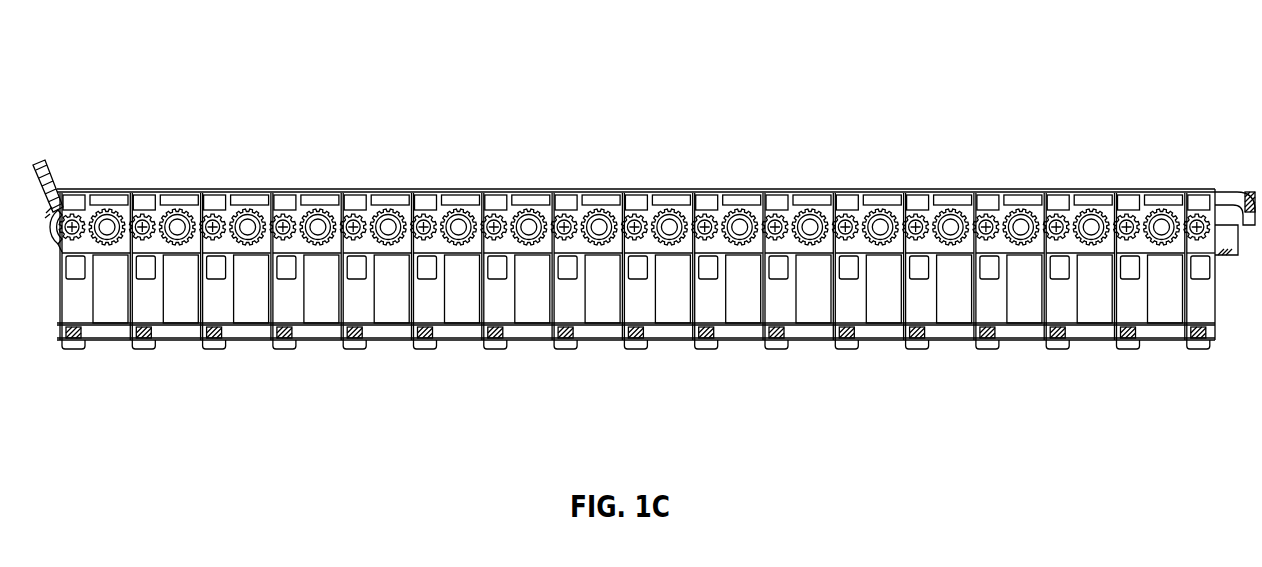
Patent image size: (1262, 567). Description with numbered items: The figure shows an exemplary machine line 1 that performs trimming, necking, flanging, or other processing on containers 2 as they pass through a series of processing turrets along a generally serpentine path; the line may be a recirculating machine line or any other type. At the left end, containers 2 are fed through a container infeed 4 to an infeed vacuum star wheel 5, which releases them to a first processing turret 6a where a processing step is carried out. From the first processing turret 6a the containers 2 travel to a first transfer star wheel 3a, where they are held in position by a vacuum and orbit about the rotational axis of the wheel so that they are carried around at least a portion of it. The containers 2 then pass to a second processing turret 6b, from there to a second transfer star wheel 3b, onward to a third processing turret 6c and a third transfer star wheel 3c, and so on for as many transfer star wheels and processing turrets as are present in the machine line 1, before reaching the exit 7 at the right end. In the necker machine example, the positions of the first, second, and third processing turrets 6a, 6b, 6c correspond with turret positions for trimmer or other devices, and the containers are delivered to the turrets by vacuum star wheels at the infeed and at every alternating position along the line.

The machine line 1 is at (468, 70).
The container 2 is at (55, 188).
The first transfer star wheel 3a is at (140, 221).
The second transfer star wheel 3b is at (213, 241).
The third transfer star wheel 3c is at (287, 215).
The container infeed 4 is at (46, 162).
The infeed vacuum star wheel 5 is at (63, 238).
The first processing turret 6a is at (103, 218).
The second processing turret 6b is at (187, 218).
The third processing turret 6c is at (250, 243).
The exit 7 is at (1243, 192).